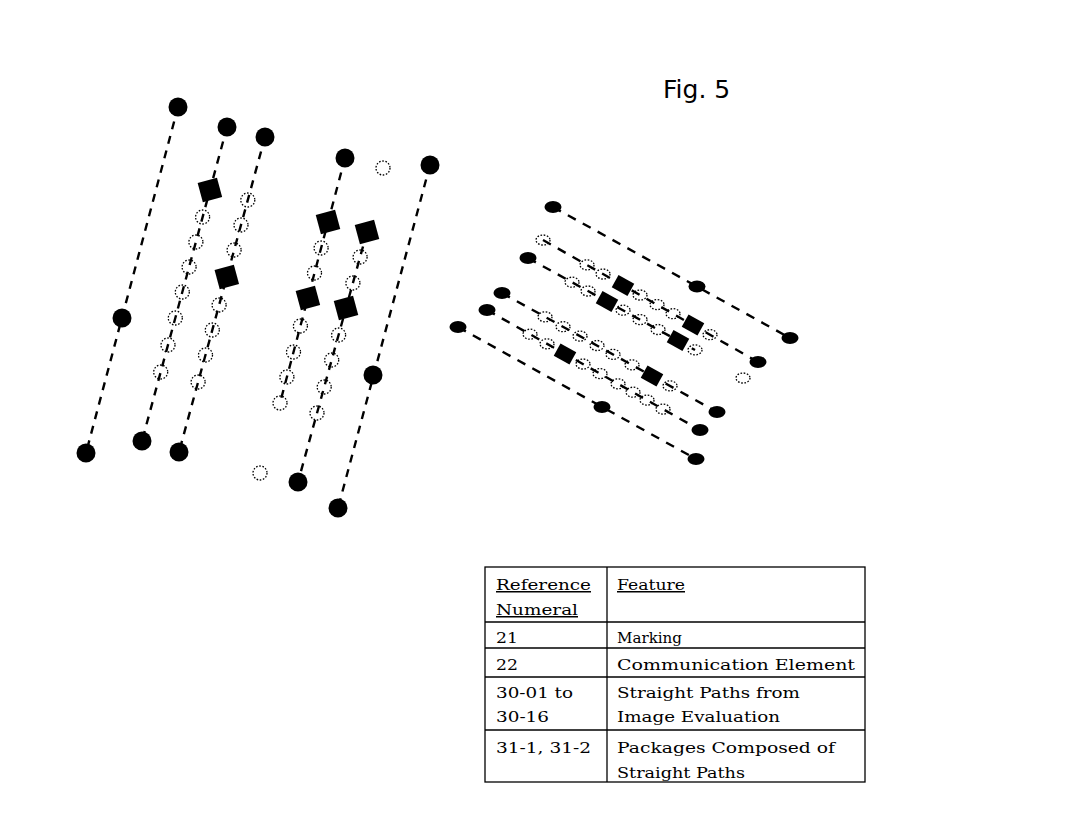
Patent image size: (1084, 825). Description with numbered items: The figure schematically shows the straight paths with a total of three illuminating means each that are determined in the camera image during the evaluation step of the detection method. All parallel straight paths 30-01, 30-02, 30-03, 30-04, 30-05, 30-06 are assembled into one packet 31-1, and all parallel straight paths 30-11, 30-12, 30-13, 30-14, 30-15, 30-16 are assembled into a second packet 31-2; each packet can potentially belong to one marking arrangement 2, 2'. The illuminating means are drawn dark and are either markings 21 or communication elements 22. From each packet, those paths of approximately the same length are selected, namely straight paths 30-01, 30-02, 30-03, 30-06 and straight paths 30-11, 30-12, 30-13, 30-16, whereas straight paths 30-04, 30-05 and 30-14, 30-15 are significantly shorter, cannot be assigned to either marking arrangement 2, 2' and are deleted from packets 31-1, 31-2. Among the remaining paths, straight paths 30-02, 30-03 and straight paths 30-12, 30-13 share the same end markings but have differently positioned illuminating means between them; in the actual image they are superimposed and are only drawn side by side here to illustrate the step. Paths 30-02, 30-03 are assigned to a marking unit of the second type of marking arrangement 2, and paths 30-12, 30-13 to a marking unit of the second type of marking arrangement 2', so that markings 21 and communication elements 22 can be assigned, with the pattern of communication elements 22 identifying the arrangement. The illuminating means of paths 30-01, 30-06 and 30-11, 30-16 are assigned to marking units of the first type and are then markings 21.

The marking 21 is at (175, 100).
The communication element 22 is at (215, 180).
The straight path 30-01 is at (168, 142).
The straight path 30-02 is at (217, 165).
The straight path 30-03 is at (192, 410).
The straight path 30-04 is at (337, 188).
The straight path 30-05 is at (307, 455).
The straight path 30-06 is at (347, 482).
The straight path 30-11 is at (482, 338).
The straight path 30-12 is at (513, 325).
The straight path 30-13 is at (695, 398).
The straight path 30-14 is at (553, 272).
The straight path 30-15 is at (733, 345).
The straight path 30-16 is at (619, 242).
The packet 31-1 is at (148, 470).
The packet 31-2 is at (737, 247).
The marking arrangement 2 is at (260, 329).
The marking arrangement 2' is at (625, 374).